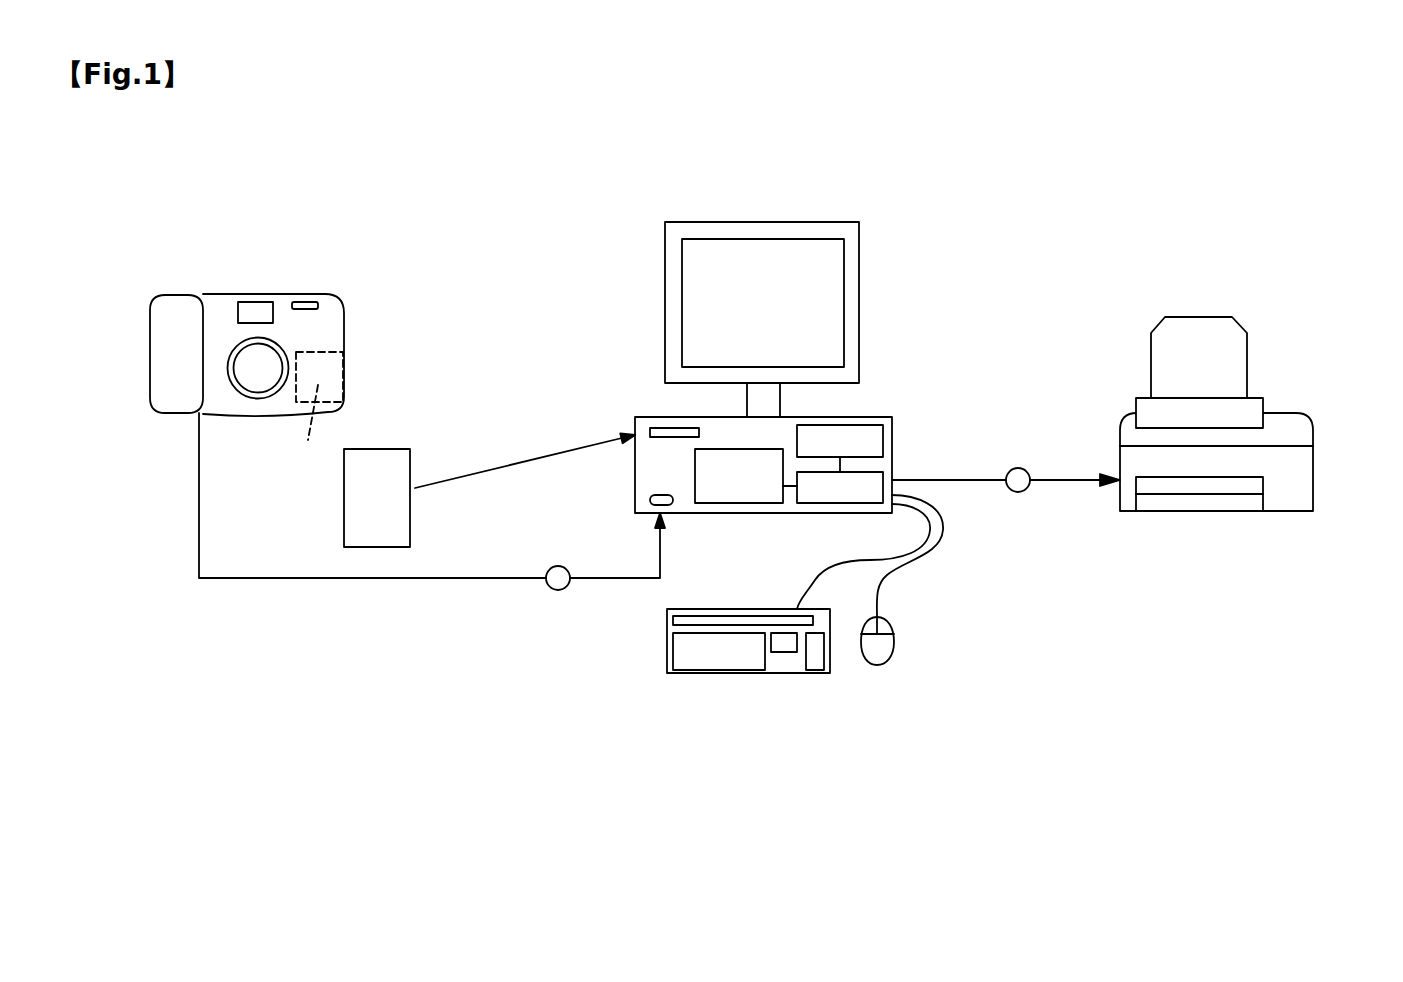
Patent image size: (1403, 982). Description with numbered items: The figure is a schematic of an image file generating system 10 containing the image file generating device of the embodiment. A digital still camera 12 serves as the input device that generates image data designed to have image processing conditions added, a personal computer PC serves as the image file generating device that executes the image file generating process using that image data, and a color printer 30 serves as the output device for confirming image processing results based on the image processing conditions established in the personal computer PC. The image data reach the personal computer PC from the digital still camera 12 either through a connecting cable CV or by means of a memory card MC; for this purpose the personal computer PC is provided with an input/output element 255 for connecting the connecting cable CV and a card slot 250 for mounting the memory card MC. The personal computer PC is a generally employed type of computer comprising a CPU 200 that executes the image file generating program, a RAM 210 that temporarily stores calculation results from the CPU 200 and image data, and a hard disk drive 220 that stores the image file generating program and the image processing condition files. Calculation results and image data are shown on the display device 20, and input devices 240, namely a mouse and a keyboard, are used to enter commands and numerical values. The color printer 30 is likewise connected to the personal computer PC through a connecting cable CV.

The image file generating system 10 is at (755, 137).
The digital still camera 12 is at (228, 291).
The display device 20 is at (862, 283).
The color printer 30 is at (1278, 412).
The CPU 200 is at (813, 493).
The RAM 210 is at (875, 442).
The hard disk drive 220 is at (750, 497).
The input devices 240 is at (838, 698).
The card slot 250 is at (677, 431).
The input/output element 255 is at (660, 497).
The memory card MC is at (360, 508).
The connecting cable CV is at (563, 566).
The personal computer PC is at (900, 375).